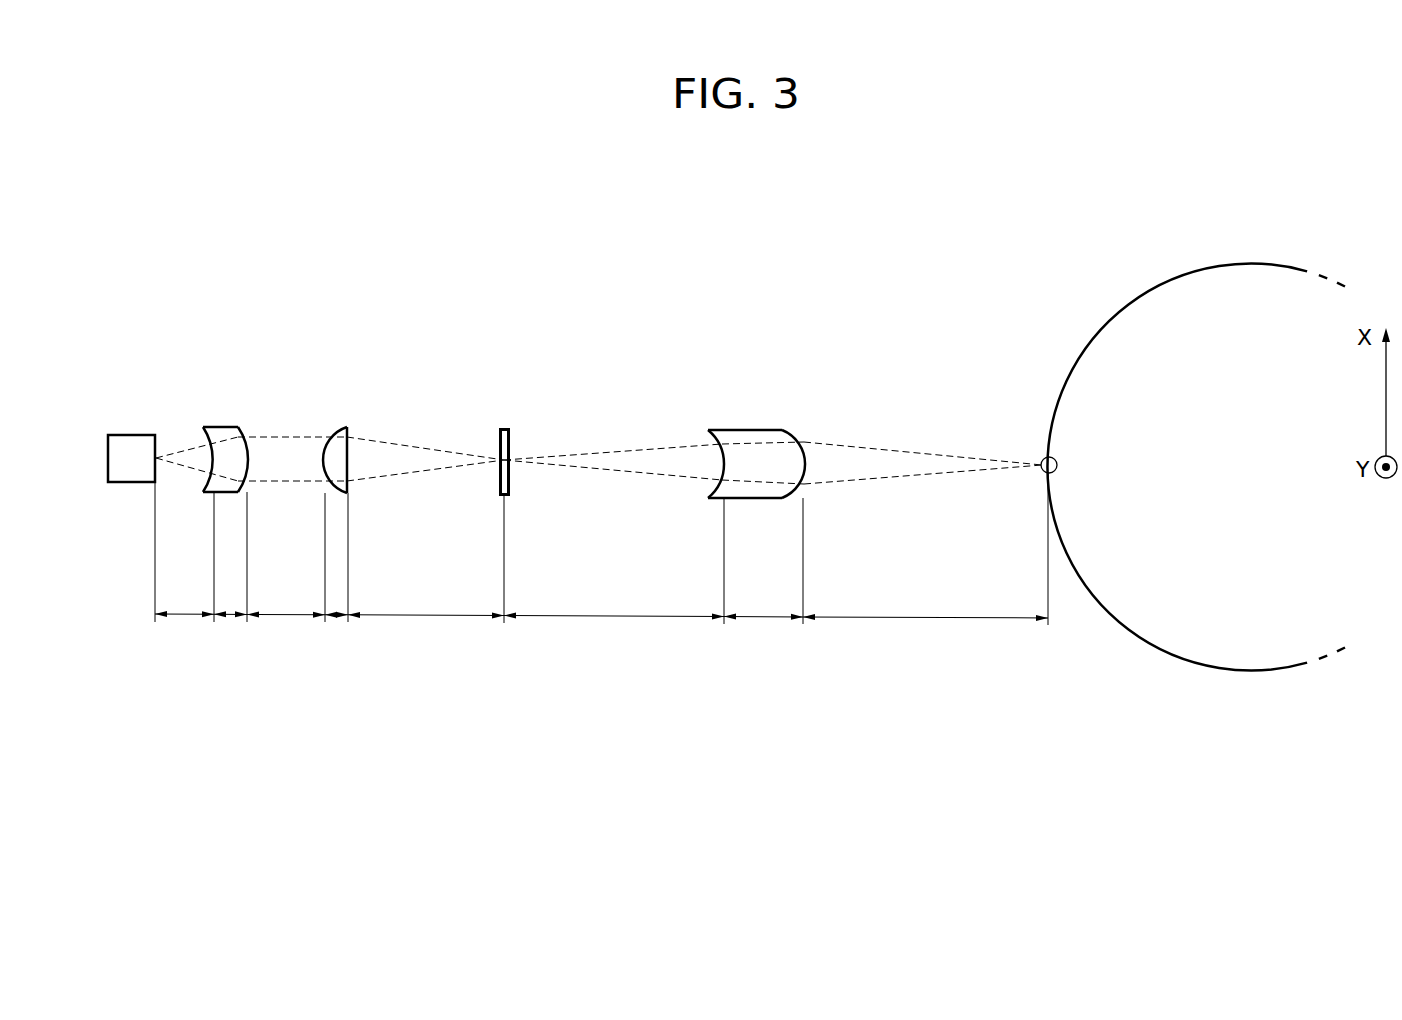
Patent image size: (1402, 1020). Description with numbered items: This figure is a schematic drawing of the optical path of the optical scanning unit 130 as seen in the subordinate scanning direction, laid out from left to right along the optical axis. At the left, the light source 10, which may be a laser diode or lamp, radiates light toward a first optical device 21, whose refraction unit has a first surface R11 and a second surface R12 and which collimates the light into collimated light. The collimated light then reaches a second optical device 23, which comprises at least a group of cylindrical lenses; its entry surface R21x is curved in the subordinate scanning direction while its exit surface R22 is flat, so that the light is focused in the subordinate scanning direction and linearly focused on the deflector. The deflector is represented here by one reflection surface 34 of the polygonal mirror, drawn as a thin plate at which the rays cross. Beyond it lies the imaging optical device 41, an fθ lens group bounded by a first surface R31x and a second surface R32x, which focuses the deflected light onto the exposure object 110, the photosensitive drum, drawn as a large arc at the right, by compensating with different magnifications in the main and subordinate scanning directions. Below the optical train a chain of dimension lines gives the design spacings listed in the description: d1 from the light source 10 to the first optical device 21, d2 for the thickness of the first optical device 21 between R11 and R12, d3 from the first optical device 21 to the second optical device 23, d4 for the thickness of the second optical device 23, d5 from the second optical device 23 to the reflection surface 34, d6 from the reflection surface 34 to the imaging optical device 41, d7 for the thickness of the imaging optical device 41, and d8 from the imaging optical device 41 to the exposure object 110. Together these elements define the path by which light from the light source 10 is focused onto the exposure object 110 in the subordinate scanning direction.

The light source 10 is at (113, 426).
The first optical device 21 is at (227, 422).
The second optical device 23 is at (369, 409).
The reflection surface 34 is at (518, 425).
The imaging optical device 41 is at (760, 411).
The exposure object 110 is at (1125, 288).
The optical scanning unit 130 is at (442, 716).
The first surface of refraction unit of first optical device R11 is at (212, 457).
The second surface of refraction unit of first optical device R12 is at (242, 430).
The first surface of second optical device in subordinate scanning direction R21x is at (328, 455).
The second surface of second optical device R22 is at (350, 433).
The first surface of imaging optical device in subordinate scanning direction R31x is at (718, 442).
The second surface of imaging optical device in subordinate scanning direction R32x is at (804, 461).
The distance between light source and first optical device d1 is at (184, 600).
The thickness of first optical device d2 is at (229, 621).
The distance between first and second optical devices d3 is at (286, 600).
The thickness of second optical device d4 is at (336, 621).
The distance between second optical device and polygonal mirror d5 is at (426, 602).
The distance between polygonal mirror and imaging optical device d6 is at (614, 603).
The thickness of imaging optical device d7 is at (763, 603).
The distance between imaging optical device and exposure object d8 is at (925, 604).